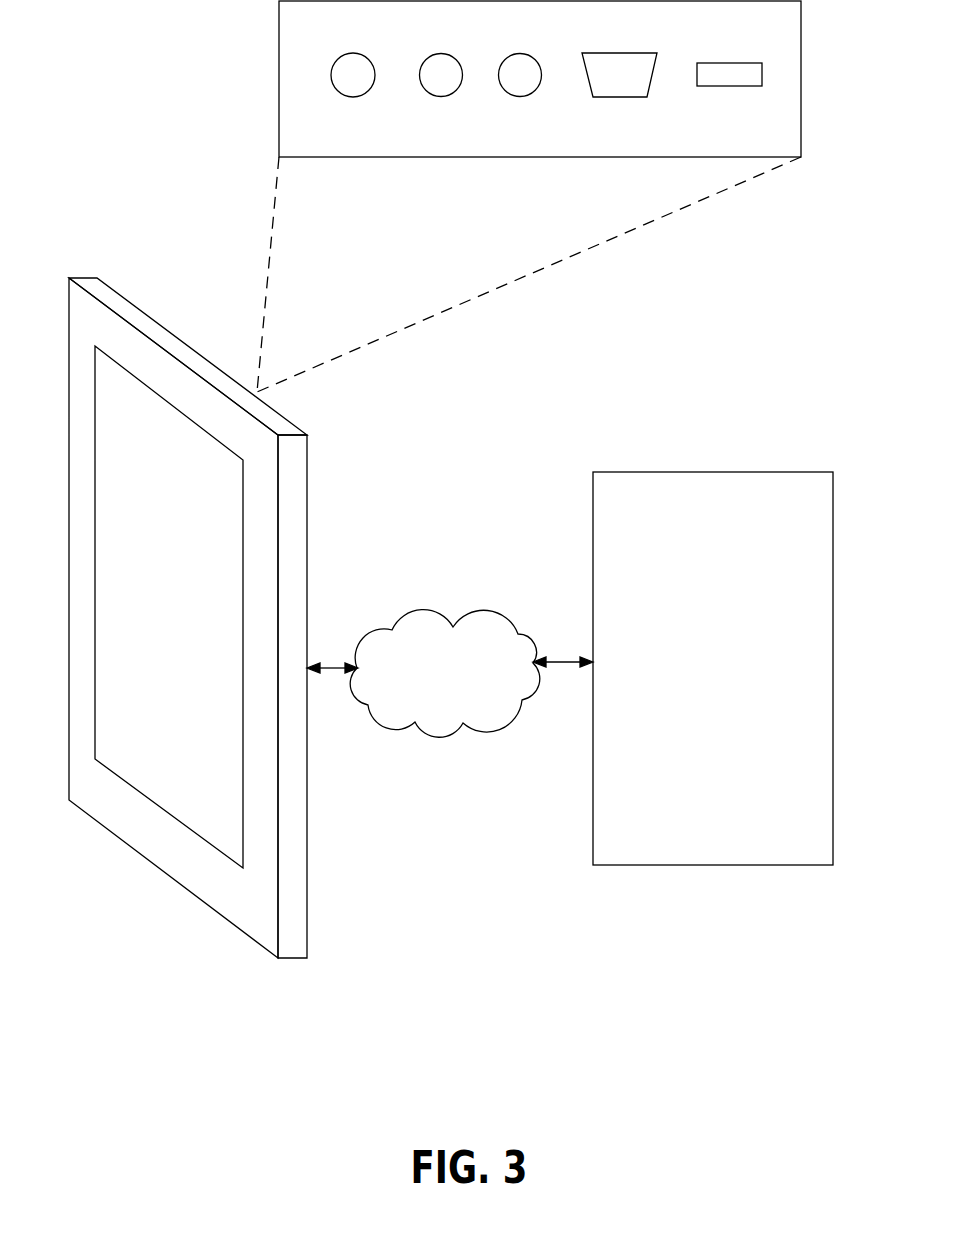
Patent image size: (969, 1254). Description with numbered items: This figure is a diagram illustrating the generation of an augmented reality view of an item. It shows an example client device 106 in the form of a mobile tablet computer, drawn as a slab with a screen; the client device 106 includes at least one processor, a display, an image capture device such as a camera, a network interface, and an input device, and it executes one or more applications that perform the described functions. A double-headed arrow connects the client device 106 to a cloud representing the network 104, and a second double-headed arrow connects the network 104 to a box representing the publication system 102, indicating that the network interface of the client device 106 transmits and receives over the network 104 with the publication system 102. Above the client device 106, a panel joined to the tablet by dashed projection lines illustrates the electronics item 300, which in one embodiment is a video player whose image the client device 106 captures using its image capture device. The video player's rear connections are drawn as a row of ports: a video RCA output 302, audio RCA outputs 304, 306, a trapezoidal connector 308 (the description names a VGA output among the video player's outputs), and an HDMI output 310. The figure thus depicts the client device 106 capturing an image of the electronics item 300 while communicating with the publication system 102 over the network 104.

The publication system 102 is at (713, 668).
The network 104 is at (450, 674).
The client device 106 is at (130, 270).
The electronics item 300 is at (540, 79).
The video RCA output 302 is at (353, 90).
The audio RCA output 304 is at (441, 91).
The audio RCA output 306 is at (520, 91).
The trapezoidal control 308 is at (619, 90).
The HDMI output 310 is at (729, 95).